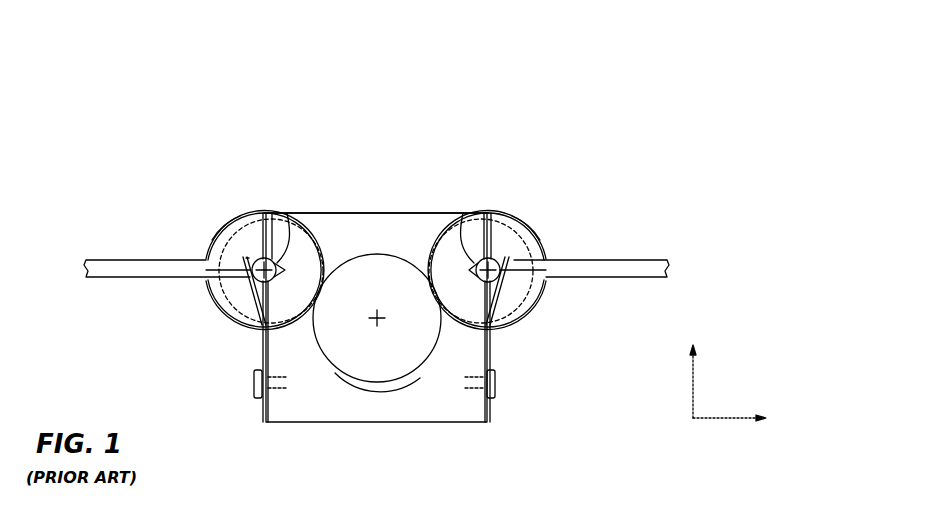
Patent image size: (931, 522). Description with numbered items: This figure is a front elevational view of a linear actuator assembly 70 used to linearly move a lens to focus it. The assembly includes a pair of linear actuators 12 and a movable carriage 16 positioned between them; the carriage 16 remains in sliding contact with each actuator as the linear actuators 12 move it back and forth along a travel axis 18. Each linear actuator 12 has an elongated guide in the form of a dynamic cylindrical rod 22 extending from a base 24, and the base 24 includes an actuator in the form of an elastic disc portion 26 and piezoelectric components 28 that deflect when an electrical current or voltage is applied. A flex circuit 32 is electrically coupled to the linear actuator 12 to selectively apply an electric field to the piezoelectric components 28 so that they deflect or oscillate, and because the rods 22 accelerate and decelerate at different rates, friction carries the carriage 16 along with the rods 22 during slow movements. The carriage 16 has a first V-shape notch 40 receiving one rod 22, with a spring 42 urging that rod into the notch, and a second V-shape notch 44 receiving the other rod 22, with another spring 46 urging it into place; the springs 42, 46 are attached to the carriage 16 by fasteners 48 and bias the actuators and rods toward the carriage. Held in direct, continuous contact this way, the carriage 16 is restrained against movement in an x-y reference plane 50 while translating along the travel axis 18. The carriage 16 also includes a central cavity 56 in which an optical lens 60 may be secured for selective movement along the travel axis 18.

The linear actuator 12 is at (176, 290).
The movable carriage 16 is at (366, 228).
The travel axis 18 is at (385, 328).
The dynamic cylindrical rod 22 is at (250, 227).
The base 24 is at (272, 188).
The elastic disc portion 26 is at (225, 227).
The piezoelectric components 28 is at (227, 290).
The flex circuit 32 is at (147, 258).
The first V-shape notch 40 is at (286, 228).
The spring 42 is at (252, 310).
The second V-shape notch 44 is at (466, 218).
The spring 46 is at (514, 322).
The fasteners 48 is at (257, 383).
The x-y reference plane 50 is at (720, 422).
The central cavity 56 is at (420, 385).
The optical lens 60 is at (337, 358).
The linear actuator assembly 70 is at (386, 265).